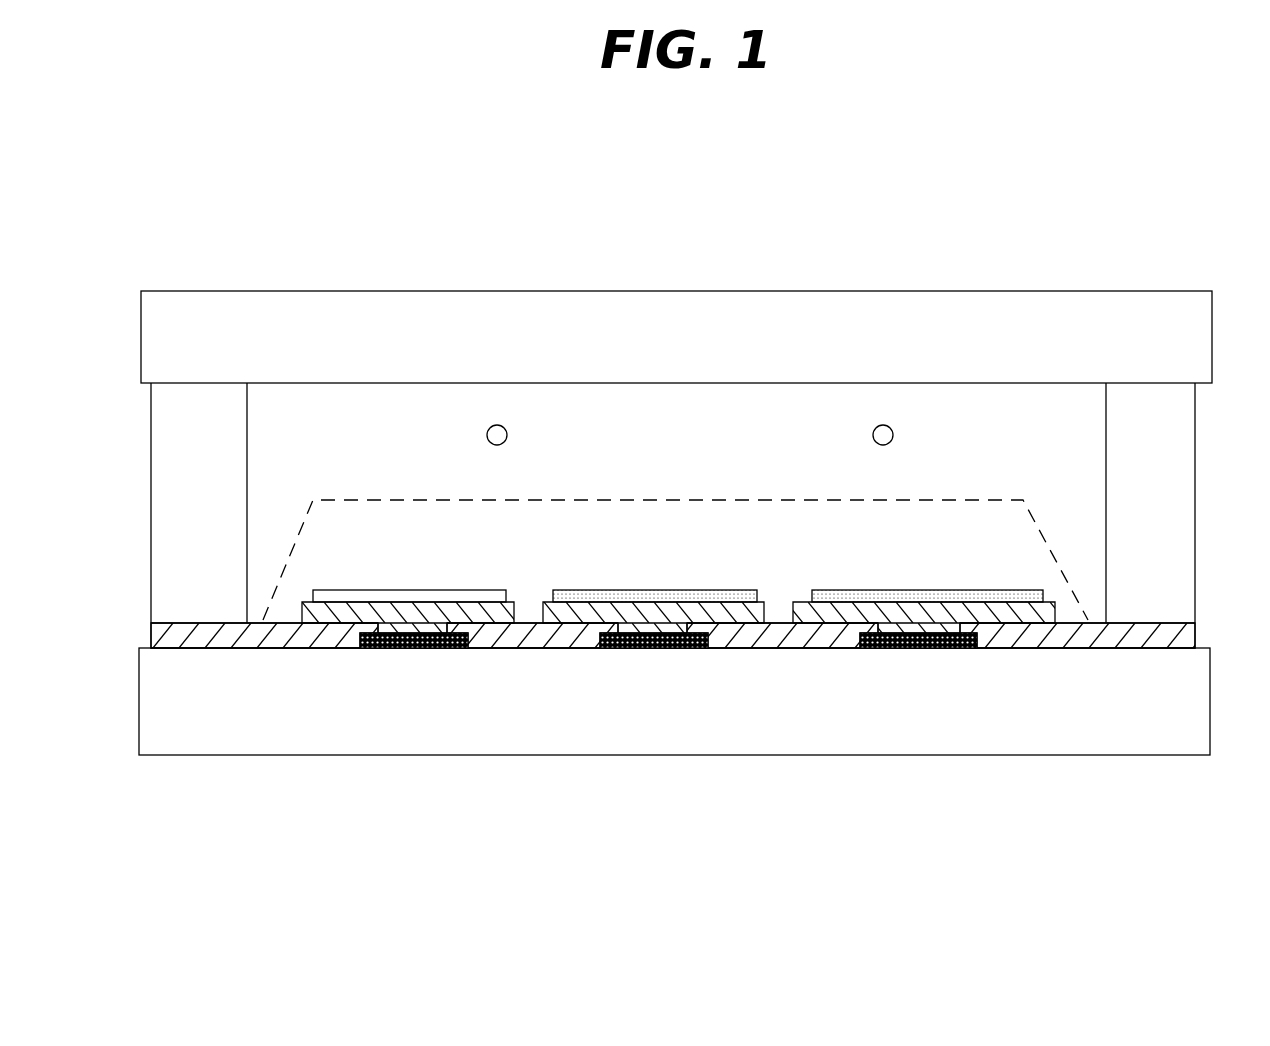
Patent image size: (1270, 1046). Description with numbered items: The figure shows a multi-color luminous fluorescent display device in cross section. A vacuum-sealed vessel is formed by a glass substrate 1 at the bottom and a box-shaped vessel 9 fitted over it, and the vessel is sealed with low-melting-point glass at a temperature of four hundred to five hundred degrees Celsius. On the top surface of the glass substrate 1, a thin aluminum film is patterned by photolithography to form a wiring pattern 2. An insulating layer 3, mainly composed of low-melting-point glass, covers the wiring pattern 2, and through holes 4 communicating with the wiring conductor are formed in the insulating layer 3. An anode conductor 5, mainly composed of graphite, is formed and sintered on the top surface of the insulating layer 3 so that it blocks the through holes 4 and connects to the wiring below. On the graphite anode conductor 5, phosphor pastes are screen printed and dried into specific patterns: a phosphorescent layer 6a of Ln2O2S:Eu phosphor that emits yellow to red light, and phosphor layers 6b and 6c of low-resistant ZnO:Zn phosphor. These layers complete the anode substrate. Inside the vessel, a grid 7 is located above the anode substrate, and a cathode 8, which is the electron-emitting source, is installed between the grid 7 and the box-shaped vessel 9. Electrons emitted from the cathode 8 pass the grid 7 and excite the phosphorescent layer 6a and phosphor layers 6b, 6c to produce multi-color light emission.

The glass substrate 1 is at (218, 723).
The wiring pattern 2 is at (401, 650).
The insulating layer 3 is at (540, 652).
The through holes 4 is at (410, 630).
The anode conductor 5 is at (737, 613).
The phosphorescent layer 6a is at (452, 590).
The phosphor layer 6b is at (658, 590).
The phosphor layer 6c is at (852, 590).
The grid 7 is at (1063, 570).
The cathode 8 is at (884, 425).
The box-shaped vessel 9 is at (1045, 295).